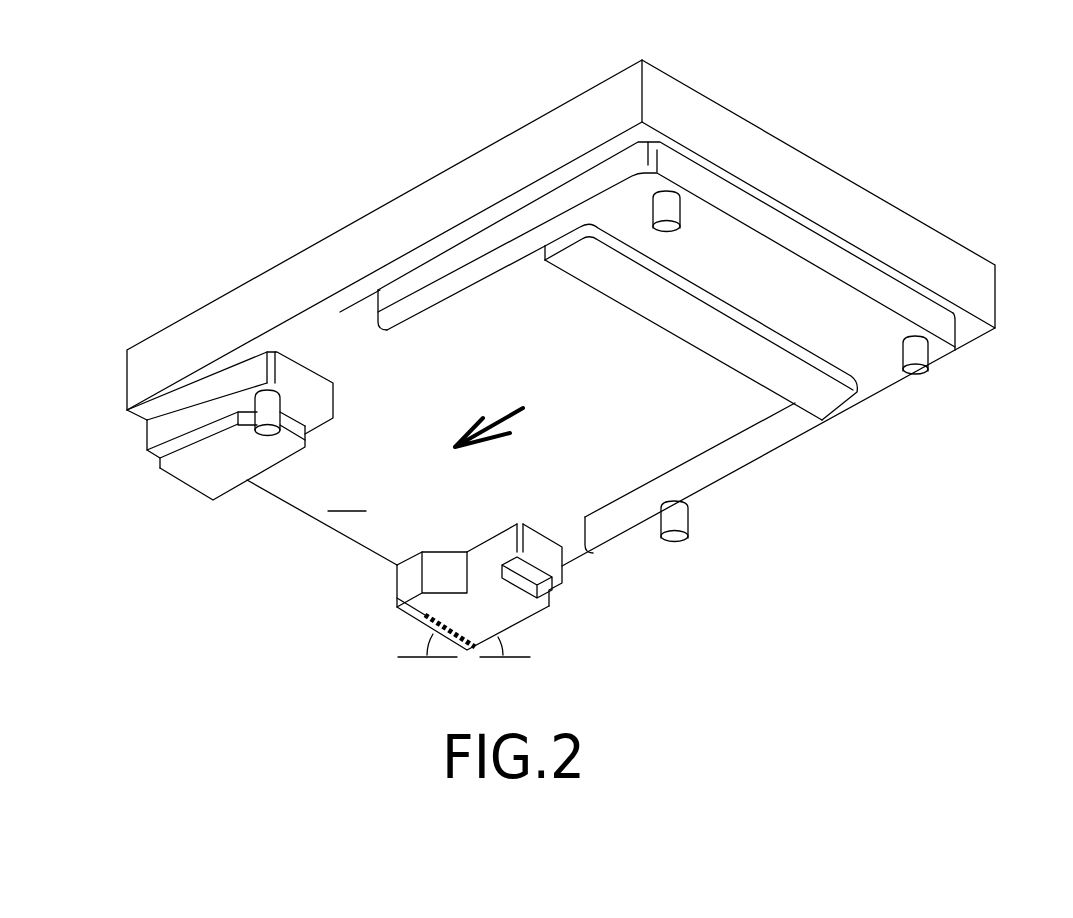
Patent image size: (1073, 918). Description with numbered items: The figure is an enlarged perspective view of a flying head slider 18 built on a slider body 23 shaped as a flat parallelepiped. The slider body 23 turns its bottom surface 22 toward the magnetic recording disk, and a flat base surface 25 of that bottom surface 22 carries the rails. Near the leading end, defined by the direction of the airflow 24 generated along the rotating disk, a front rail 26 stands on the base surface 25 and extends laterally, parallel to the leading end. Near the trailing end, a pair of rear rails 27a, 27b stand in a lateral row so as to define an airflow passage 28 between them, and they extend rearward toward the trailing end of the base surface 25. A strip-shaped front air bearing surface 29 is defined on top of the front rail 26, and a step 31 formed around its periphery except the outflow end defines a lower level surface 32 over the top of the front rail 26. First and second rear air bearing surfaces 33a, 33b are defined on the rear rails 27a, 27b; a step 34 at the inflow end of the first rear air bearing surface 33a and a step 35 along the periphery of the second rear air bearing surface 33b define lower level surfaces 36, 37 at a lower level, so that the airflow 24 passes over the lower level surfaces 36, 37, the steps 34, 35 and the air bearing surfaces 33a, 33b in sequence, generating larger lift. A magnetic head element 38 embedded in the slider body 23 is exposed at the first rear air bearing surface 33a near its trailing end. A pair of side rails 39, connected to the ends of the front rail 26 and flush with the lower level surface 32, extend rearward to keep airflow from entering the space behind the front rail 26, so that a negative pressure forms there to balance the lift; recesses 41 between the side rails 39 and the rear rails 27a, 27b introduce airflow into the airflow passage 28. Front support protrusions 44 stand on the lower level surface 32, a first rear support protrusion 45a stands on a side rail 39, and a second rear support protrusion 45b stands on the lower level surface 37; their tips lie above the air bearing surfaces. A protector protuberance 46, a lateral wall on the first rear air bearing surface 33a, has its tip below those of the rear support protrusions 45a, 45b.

The flying head slider 18 is at (581, 334).
The bottom surface 22 is at (306, 561).
The slider body 23 is at (505, 148).
The airflow 24 is at (507, 417).
The base surface 25 is at (285, 338).
The front rail 26 is at (940, 327).
The rear rail 27a is at (490, 594).
The rear rail 27b is at (223, 429).
The airflow passage 28 is at (346, 491).
The front air bearing surface 29 is at (701, 322).
The step 31 is at (733, 308).
The lower level surface 32 is at (885, 385).
The first rear air bearing surface 33a is at (528, 610).
The second rear air bearing surface 33b is at (202, 483).
The step 34 is at (528, 558).
The step 35 is at (315, 437).
The lower level surface 36 is at (540, 577).
The lower level surface 37 is at (238, 402).
The magnetic head element 38 is at (397, 590).
The side rails 39 is at (513, 253).
The recesses 41 is at (372, 310).
The front support protrusions 44 is at (667, 205).
The first rear support protrusion 45a is at (675, 540).
The second rear support protrusion 45b is at (277, 408).
The protector protuberance 46 is at (467, 650).